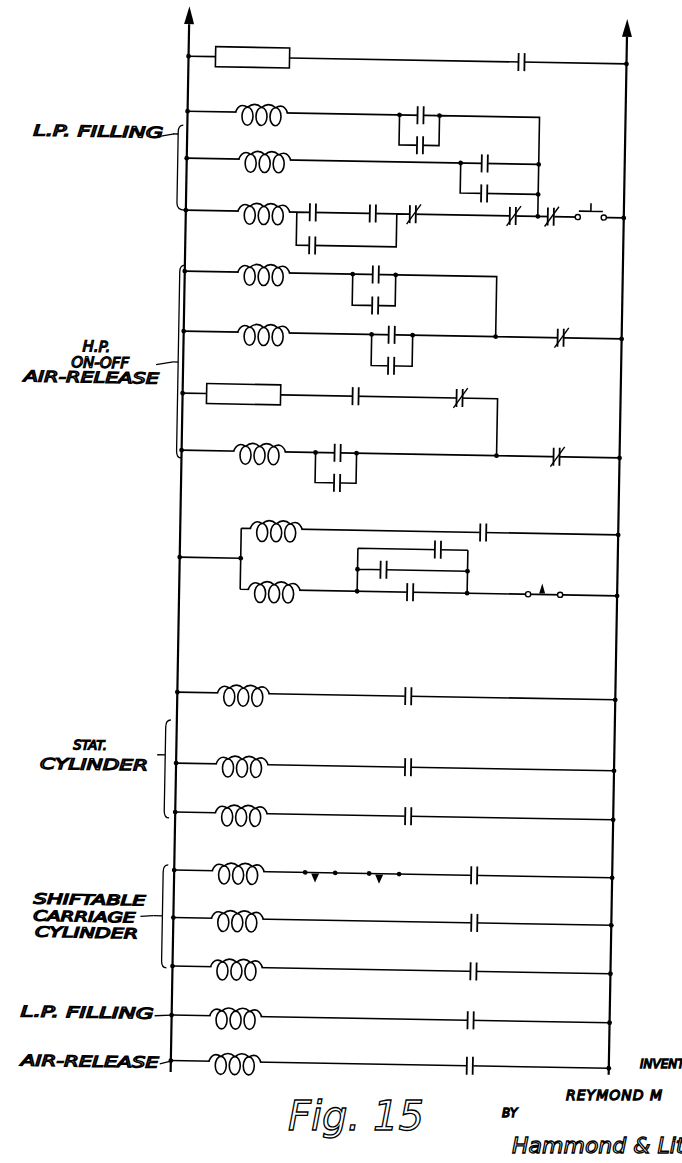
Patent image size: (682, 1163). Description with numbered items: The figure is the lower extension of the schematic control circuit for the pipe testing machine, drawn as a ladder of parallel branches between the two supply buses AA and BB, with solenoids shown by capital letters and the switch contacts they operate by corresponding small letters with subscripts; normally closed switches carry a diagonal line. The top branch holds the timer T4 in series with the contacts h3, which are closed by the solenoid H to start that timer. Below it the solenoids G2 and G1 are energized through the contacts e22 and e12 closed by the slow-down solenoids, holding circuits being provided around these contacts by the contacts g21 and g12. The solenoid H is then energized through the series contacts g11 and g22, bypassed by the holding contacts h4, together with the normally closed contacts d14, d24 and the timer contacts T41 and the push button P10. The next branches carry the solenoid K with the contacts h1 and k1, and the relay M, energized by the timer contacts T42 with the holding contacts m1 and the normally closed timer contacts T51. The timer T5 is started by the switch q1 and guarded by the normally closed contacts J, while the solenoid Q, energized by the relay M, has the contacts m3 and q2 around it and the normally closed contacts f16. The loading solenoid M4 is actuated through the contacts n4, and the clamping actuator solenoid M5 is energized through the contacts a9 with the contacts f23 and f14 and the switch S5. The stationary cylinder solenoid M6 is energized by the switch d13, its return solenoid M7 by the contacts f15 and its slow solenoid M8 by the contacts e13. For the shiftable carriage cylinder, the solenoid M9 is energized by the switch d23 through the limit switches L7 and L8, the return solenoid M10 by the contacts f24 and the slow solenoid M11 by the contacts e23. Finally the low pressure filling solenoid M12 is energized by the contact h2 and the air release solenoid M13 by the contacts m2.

The supply bus AA is at (177, 33).
The supply bus BB is at (621, 42).
The timer T4 is at (223, 50).
The switch contacts h3 is at (514, 59).
The relay coil G2 is at (243, 111).
The switch contacts e22 is at (409, 113).
The contact g2-1 g21 is at (407, 144).
The relay coil G1 is at (240, 158).
The switch contacts e12 is at (498, 163).
The contact g1-2 g12 is at (471, 195).
The solenoid H is at (238, 208).
The switch contacts g11 is at (310, 205).
The switch contacts g22 is at (370, 205).
The contact h4 is at (298, 244).
The contact d1-4 d14 is at (408, 228).
The contact d2-4 d24 is at (508, 232).
The timer contacts T41 is at (557, 208).
The pushbutton P10 is at (592, 203).
The relay coil K is at (238, 271).
The contact h1 is at (385, 272).
The contact k1 is at (368, 311).
The relay M is at (238, 332).
The switch contacts T42 is at (391, 334).
The contact m1 is at (392, 374).
The timer contacts T51 is at (566, 330).
The timer T5 is at (226, 387).
The switch q1 is at (349, 394).
The contact J is at (460, 392).
The solenoid Q is at (240, 451).
The contact m3 is at (335, 449).
The contact q2 is at (336, 492).
The contact f1-6 f16 is at (559, 452).
The solenoid M4 (load) M4 is at (255, 527).
The switch contacts n4 is at (486, 530).
The contact f1-4 f14 is at (447, 557).
The contact f2-3 f23 is at (376, 568).
The clamping actuator solenoid M5 is at (251, 598).
The contact a9 is at (408, 605).
The switch S5 is at (546, 592).
The solenoid M6 is at (226, 693).
The switch d13 is at (407, 692).
The return solenoid M7 is at (226, 765).
The switch contacts f15 is at (395, 764).
The solenoid M8 (slow) M8 is at (226, 814).
The contact e1-3 e13 is at (408, 813).
The solenoid M9 is at (217, 873).
The limit switch L7 is at (323, 870).
The limit switch L8 is at (387, 870).
The switch d23 is at (482, 876).
The return solenoid M10 is at (218, 920).
The switch contacts f24 is at (483, 923).
The solenoid M11 (slow) M11 is at (218, 969).
The contact e2-3 e23 is at (487, 968).
The low pressure filling solenoid M12 is at (218, 1018).
The contact h2 is at (485, 1016).
The solenoid M13 is at (218, 1064).
The switch contacts m2 is at (485, 1062).